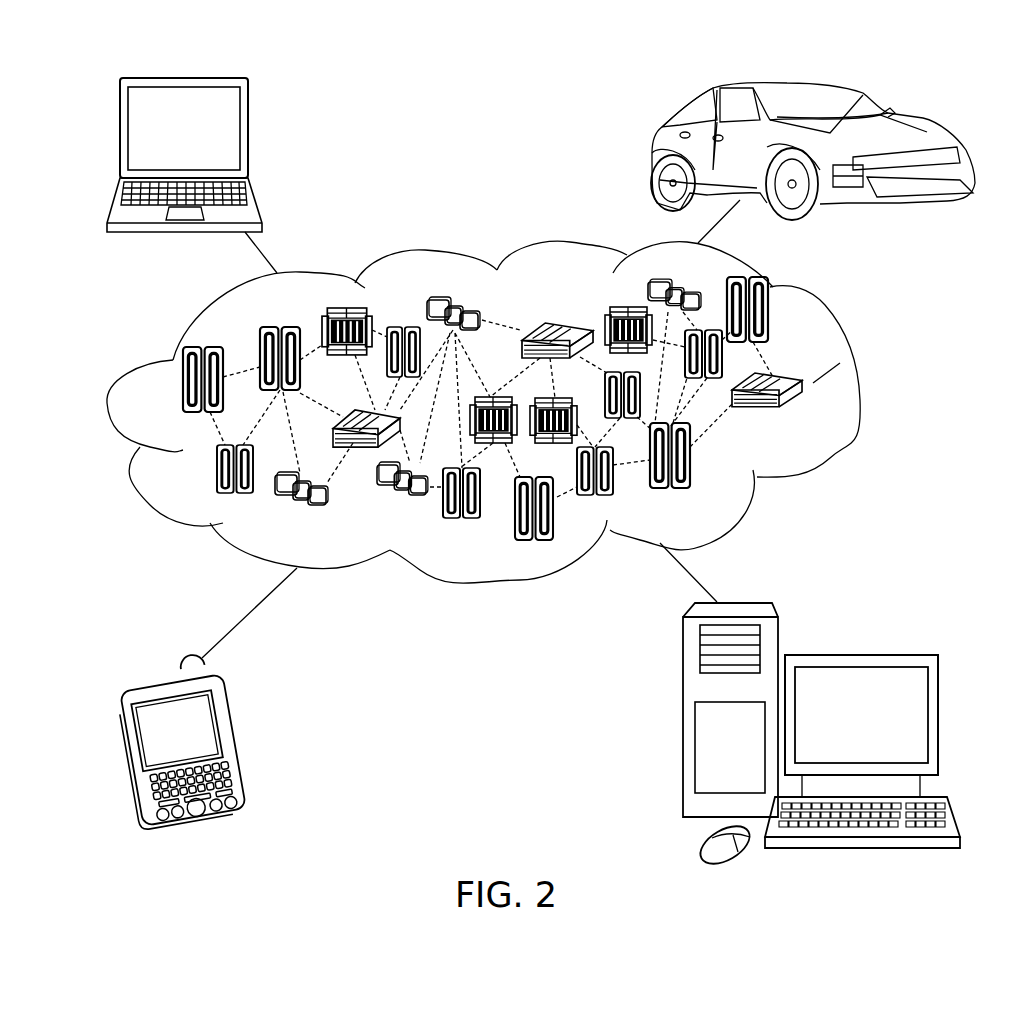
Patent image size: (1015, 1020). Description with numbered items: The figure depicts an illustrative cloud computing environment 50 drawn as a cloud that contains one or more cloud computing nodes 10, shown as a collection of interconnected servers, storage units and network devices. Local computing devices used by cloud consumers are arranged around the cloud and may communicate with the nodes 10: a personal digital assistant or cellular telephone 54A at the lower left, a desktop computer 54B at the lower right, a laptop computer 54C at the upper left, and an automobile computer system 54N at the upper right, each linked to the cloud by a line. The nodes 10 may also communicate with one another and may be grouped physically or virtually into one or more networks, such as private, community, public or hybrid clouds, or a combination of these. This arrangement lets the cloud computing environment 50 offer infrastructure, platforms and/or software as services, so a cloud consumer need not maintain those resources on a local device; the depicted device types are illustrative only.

The cloud computing node 10 is at (808, 418).
The cloud computing environment 50 is at (858, 391).
The personal digital assistant or cellular telephone 54A is at (238, 743).
The desktop computer 54B is at (857, 653).
The laptop computer 54C is at (248, 138).
The automobile computer system 54N is at (655, 150).